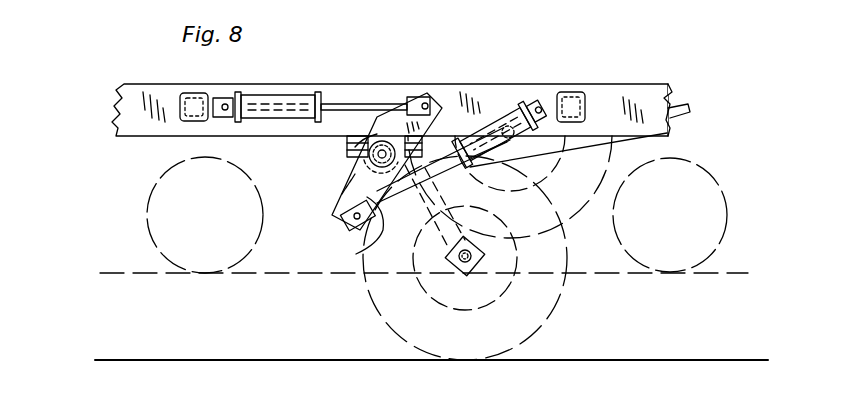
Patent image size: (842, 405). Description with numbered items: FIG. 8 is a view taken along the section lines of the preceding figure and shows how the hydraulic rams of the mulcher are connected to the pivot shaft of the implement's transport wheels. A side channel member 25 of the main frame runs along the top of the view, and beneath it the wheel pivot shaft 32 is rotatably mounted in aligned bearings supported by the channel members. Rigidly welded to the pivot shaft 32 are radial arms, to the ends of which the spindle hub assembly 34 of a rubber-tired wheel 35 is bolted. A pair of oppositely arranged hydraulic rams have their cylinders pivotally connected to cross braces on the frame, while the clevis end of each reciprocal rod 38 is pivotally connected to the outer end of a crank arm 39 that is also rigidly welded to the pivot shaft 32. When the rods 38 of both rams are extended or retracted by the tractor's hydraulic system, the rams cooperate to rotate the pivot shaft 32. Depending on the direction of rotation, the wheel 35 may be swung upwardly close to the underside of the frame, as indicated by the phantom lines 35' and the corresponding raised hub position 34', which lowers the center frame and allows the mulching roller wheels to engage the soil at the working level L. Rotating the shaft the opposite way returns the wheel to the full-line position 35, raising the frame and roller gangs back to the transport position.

The side channel member 25 is at (654, 84).
The wheel pivot shaft 32 is at (368, 146).
The spindle hub assembly 34 is at (445, 233).
The wheel hub (raised) 34' is at (568, 150).
The rubber-tired wheel 35 is at (478, 258).
The phantom-line position of wheels 35' is at (510, 199).
The reciprocal rod 38 is at (400, 96).
The crank arm 39 is at (440, 106).
The working level of the mulching rollers L is at (708, 360).